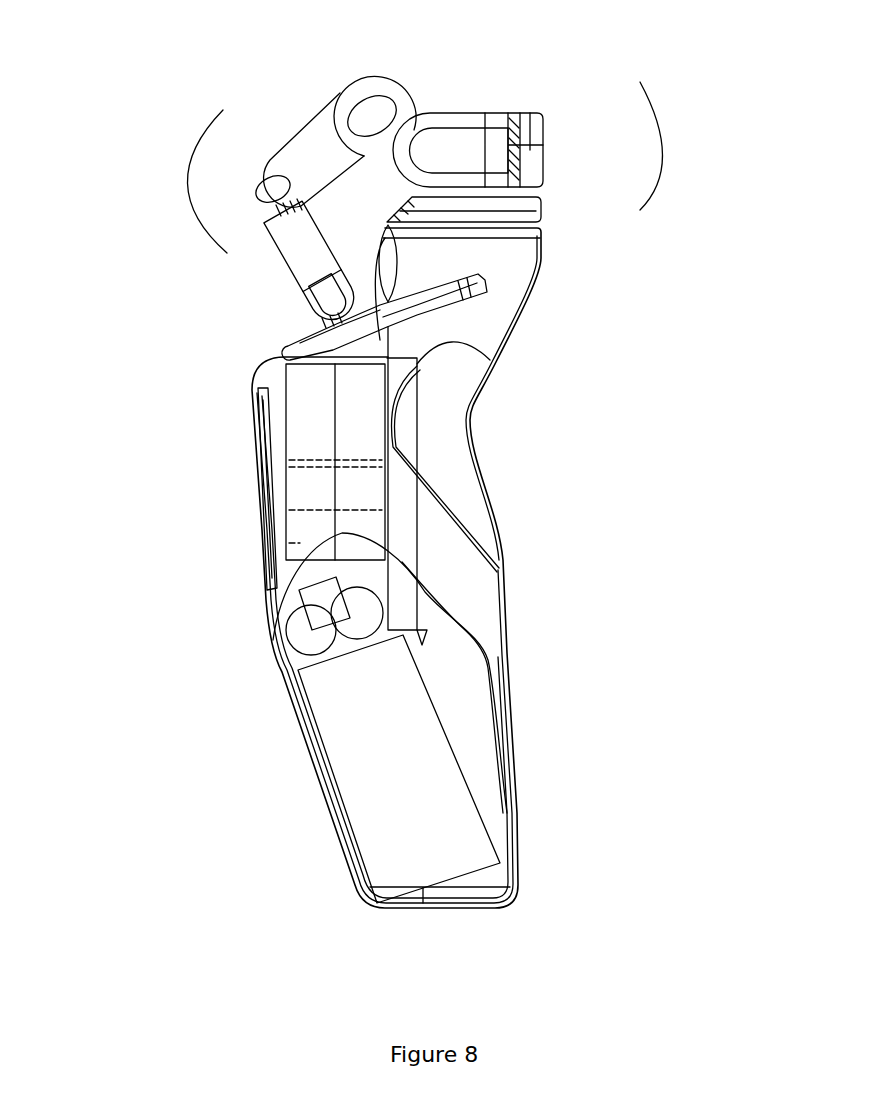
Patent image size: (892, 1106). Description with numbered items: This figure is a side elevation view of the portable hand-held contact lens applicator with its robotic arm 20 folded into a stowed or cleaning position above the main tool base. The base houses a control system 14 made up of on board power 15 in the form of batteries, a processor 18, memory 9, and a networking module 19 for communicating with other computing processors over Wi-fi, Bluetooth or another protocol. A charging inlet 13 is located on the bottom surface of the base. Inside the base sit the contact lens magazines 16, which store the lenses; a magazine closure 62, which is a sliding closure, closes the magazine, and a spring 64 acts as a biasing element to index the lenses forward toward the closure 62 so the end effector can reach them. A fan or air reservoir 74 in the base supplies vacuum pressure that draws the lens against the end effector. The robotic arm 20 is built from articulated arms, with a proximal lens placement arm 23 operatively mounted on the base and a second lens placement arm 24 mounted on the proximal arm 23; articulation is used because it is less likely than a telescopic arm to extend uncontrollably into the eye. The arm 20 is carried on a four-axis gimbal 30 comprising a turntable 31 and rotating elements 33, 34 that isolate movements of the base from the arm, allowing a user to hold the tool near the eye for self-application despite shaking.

The memory 9 is at (405, 582).
The charging inlet 13 is at (450, 912).
The control system 14 is at (412, 418).
The on board power 15 is at (407, 798).
The contact lens magazine 16 is at (313, 437).
The processor 18 is at (435, 510).
The networking module 19 is at (402, 612).
The robotic arm 20 is at (190, 203).
The proximal lens placement arm 23 is at (298, 160).
The second lens placement arm 24 is at (300, 252).
The four-axis gimbal 30 is at (662, 163).
The turntable 31 is at (520, 210).
The rotating element 33 is at (447, 152).
The rotating element 34 is at (371, 108).
The magazine closure 62 is at (288, 345).
The spring 64 is at (303, 543).
The fan or air reservoir 74 is at (303, 640).